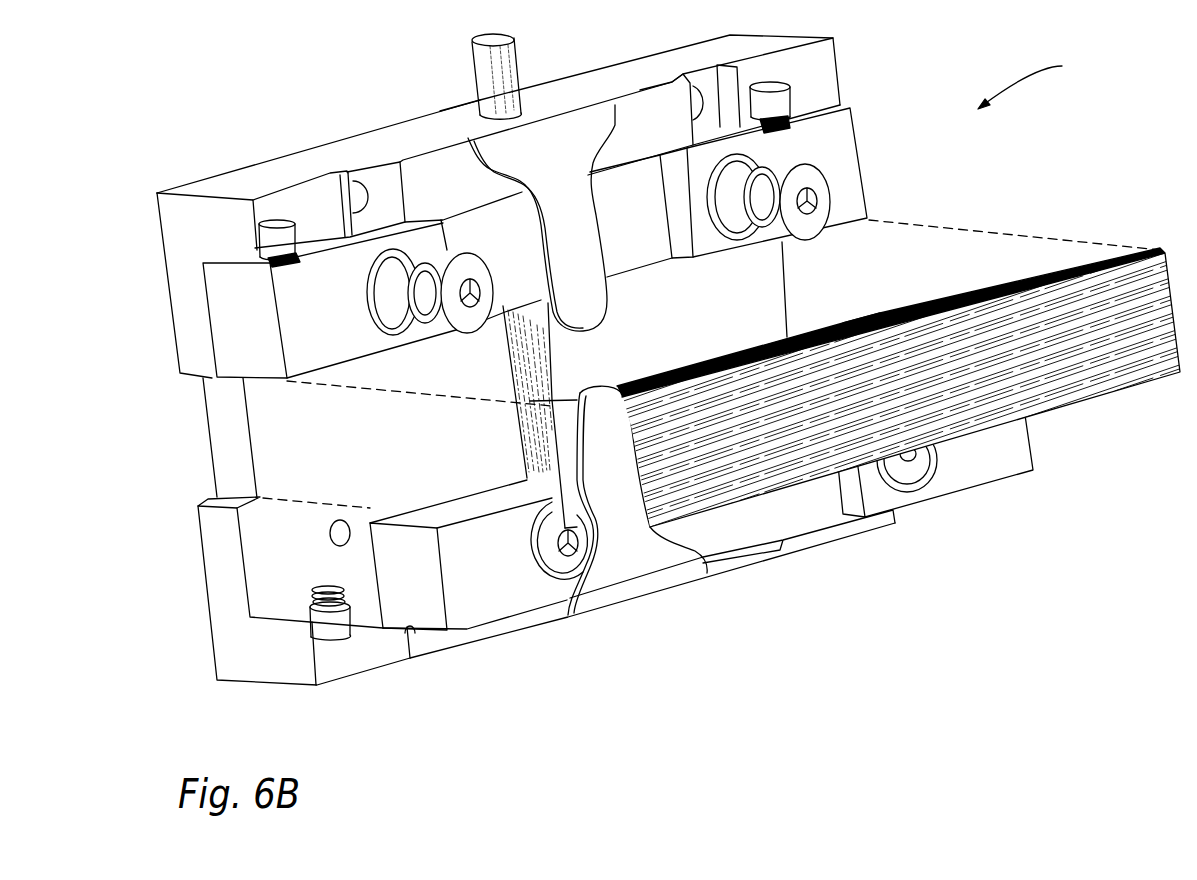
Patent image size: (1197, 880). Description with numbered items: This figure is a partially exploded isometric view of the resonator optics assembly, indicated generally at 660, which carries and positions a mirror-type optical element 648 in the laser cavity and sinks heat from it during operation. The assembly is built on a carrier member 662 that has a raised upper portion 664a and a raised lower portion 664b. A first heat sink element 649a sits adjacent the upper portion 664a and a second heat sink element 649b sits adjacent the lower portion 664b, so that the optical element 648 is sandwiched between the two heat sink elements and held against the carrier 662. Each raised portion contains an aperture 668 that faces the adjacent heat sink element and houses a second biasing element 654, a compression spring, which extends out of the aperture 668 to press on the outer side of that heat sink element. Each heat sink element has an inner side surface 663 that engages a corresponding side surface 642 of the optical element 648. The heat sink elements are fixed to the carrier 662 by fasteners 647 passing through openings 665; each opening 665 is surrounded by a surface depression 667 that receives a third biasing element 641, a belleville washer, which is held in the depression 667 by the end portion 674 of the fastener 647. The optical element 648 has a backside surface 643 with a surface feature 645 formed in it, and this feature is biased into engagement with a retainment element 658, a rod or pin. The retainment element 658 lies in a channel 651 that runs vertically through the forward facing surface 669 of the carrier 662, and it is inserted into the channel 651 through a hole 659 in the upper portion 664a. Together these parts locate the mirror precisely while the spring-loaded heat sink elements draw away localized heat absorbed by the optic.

The clamp assembly 660 is at (1038, 80).
The carrier member 662 is at (223, 177).
The hole 659 is at (470, 108).
The retainment element 658 is at (508, 63).
The aperture 668 is at (770, 82).
The raised upper portion 664a is at (823, 73).
The first heat sink element 649a is at (843, 125).
The end portion 674 is at (477, 265).
The openings 665 is at (428, 316).
The surface depression 667 is at (393, 265).
The fasteners 647 is at (437, 328).
The third biasing element 641 is at (445, 255).
The second biasing element 654 is at (272, 265).
The forward facing surface 669 is at (456, 458).
The inner side surface 663 is at (437, 512).
The backside surface 643 is at (657, 374).
The channel 651 is at (563, 390).
The side surface 642 is at (930, 307).
The surface feature 645 is at (855, 307).
The optical element 648 is at (1072, 377).
The second heat sink element 649b is at (500, 597).
The raised lower portion 664b is at (377, 668).